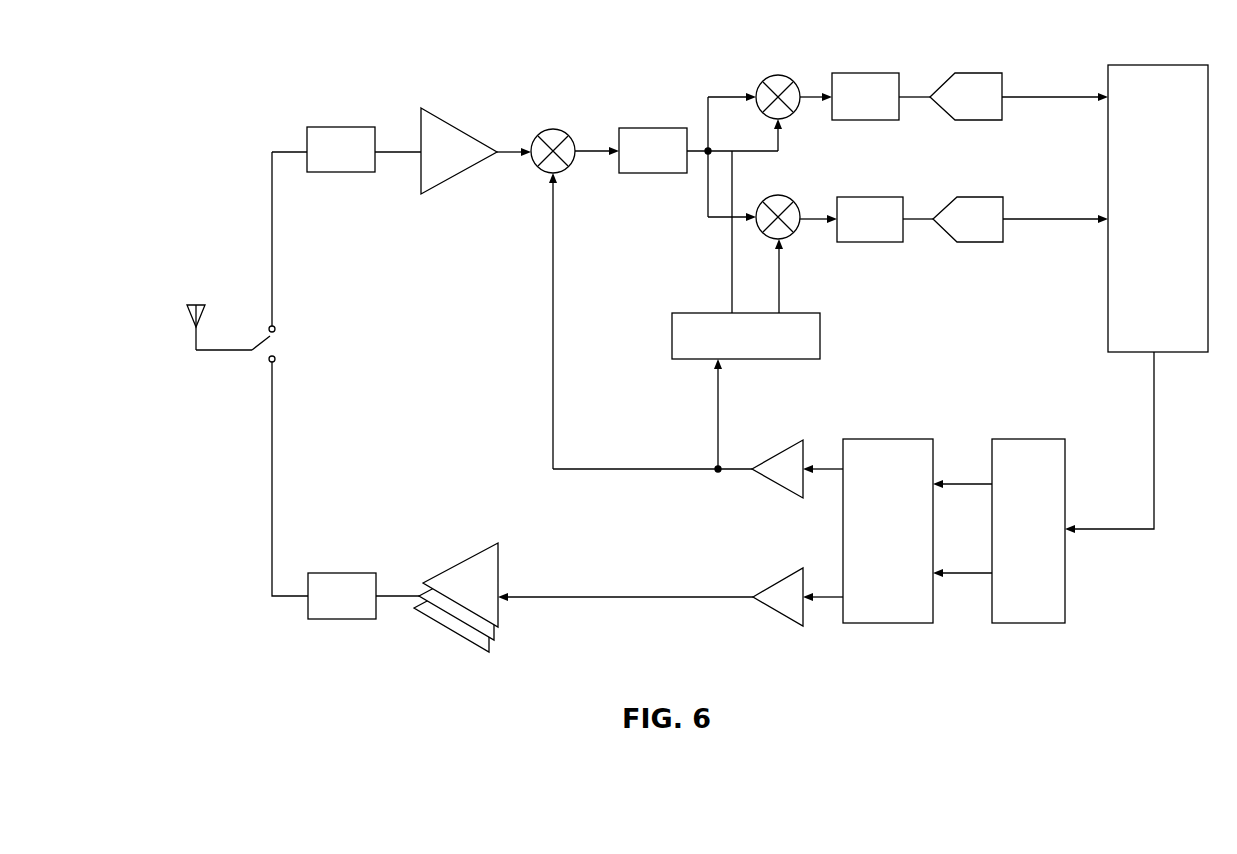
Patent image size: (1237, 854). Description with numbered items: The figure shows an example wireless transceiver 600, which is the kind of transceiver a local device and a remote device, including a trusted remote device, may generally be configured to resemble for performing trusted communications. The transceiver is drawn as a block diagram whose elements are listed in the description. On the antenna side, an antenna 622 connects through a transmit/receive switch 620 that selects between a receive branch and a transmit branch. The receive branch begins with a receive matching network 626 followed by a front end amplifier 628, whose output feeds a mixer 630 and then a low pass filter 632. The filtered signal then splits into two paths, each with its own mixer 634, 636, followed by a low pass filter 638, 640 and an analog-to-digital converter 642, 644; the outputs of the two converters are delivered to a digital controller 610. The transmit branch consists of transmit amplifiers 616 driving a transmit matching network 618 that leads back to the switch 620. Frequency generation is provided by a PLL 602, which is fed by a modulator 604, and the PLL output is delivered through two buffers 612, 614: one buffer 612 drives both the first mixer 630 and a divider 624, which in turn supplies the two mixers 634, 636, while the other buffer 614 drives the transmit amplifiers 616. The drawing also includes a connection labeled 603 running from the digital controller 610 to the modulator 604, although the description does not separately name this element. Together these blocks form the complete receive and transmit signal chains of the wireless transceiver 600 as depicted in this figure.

The wireless transceiver 600 is at (205, 67).
The PLL 602 is at (884, 440).
The digital-to-modulator connection 603 is at (1154, 440).
The modulator 604 is at (1021, 439).
The digital controller 610 is at (1180, 65).
The buffer 612 is at (788, 449).
The buffer 614 is at (789, 577).
The transmit amplifiers 616 is at (485, 550).
The transmit matching network 618 is at (333, 573).
The transmit/receive switch 620 is at (279, 347).
The antenna 622 is at (192, 305).
The divider 624 is at (798, 313).
The receive matching network 626 is at (341, 127).
The front end amplifier 628 is at (452, 126).
The mixer 630 is at (553, 129).
The low pass filter 632 is at (643, 128).
The mixer 634 is at (781, 76).
The mixer 636 is at (781, 196).
The low pass filter 638 is at (862, 73).
The low pass filter 640 is at (866, 197).
The analog-to-digital converter 642 is at (978, 73).
The analog-to-digital converter 644 is at (983, 197).